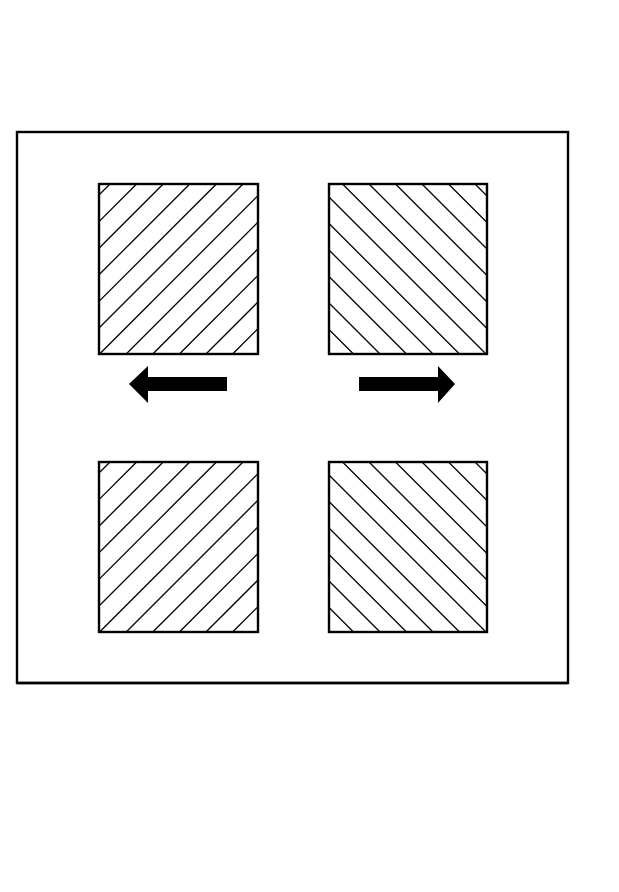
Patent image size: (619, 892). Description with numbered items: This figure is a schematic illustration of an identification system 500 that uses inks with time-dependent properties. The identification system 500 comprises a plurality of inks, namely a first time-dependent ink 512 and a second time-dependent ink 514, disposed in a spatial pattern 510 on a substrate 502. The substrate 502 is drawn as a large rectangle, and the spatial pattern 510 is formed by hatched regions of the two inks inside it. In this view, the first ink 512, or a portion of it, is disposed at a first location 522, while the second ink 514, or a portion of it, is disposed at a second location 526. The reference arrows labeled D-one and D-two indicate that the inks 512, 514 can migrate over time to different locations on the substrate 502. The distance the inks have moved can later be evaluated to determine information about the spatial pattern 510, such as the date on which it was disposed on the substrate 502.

The identification system 500 is at (298, 100).
The substrate 502 is at (93, 668).
The spatial pattern 510 is at (388, 660).
The first time-dependent ink 512 is at (131, 185).
The second time-dependent ink 514 is at (418, 185).
The first location 522 is at (213, 163).
The second location 526 is at (388, 163).